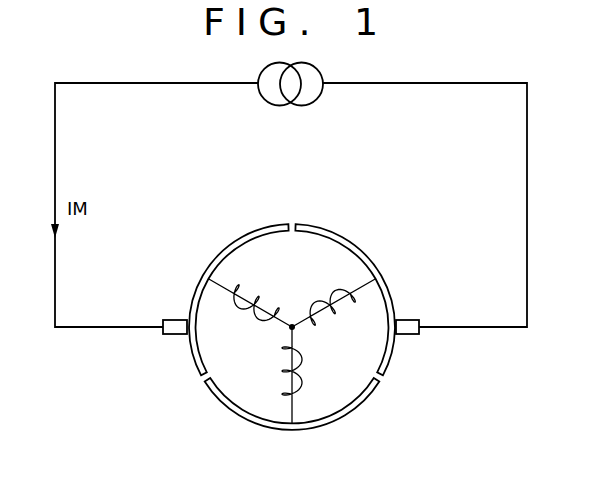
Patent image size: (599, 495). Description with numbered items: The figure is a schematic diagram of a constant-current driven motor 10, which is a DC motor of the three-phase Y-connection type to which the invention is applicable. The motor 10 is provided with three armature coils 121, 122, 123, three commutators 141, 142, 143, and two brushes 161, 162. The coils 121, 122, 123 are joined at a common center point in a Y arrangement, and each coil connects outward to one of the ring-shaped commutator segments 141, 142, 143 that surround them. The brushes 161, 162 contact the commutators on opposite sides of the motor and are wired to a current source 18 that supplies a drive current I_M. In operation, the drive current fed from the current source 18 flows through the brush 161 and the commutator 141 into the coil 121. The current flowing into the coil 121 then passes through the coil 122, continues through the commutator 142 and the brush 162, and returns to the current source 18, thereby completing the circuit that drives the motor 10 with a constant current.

The constant-current driven motor 10 is at (290, 215).
The current source 18 is at (318, 101).
The armature coil 121 is at (255, 303).
The armature coil 122 is at (333, 308).
The armature coil 123 is at (287, 375).
The commutator 141 is at (218, 258).
The commutator 142 is at (358, 252).
The commutator 143 is at (250, 417).
The brush 161 is at (170, 319).
The brush 162 is at (410, 336).